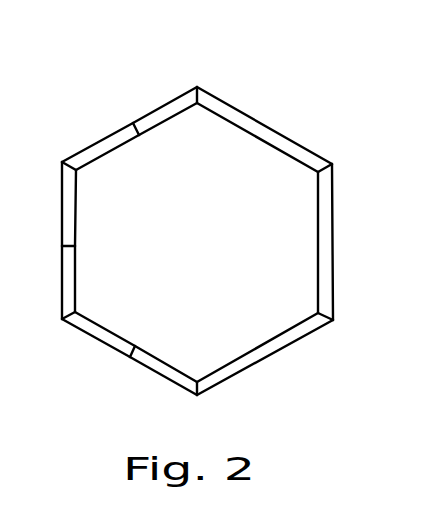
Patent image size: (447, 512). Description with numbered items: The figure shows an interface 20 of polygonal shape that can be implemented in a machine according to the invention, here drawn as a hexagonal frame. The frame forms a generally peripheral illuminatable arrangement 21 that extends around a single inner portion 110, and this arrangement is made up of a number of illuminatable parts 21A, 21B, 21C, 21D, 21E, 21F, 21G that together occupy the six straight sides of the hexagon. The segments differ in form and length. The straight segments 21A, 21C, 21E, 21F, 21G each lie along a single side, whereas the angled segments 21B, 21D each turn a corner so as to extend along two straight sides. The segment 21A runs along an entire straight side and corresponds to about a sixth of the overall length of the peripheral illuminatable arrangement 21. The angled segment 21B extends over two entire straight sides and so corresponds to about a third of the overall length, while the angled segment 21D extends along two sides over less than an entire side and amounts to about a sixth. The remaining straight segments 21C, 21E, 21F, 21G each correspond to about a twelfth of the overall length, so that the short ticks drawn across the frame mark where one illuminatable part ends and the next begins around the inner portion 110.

The frame assembly 20 is at (125, 84).
The peripheral illuminatable arrangement 21 is at (93, 337).
The illuminatable part 21A is at (232, 114).
The illuminatable part 21B is at (318, 313).
The illuminatable part 21C is at (158, 371).
The illuminatable part 21D is at (76, 308).
The illuminatable part 21E is at (68, 227).
The illuminatable part 21F is at (108, 145).
The illuminatable part 21G is at (160, 115).
The inner portion 110 is at (248, 302).